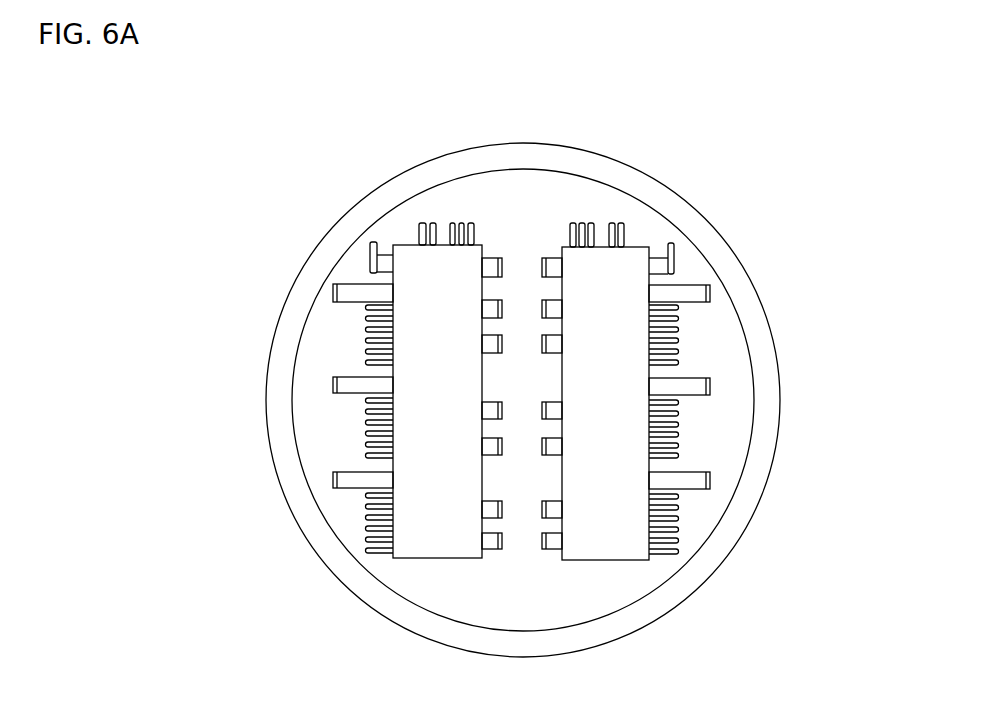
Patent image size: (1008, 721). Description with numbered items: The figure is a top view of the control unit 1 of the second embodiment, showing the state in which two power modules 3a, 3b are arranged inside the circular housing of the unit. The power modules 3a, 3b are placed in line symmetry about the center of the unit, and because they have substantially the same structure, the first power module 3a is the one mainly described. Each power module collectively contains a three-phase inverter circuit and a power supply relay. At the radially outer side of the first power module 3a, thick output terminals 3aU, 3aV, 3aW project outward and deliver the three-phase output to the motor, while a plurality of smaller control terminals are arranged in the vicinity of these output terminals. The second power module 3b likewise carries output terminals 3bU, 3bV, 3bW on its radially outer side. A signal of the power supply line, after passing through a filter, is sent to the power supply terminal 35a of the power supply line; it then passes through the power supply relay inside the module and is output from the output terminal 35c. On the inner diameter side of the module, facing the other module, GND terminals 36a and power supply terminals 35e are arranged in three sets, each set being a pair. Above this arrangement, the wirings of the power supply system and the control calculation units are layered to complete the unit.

The control unit 1 is at (432, 162).
The power module 3a is at (445, 413).
The power module 3b is at (700, 367).
The power supply terminal 35a is at (368, 252).
The output terminal 35c is at (503, 258).
The power supply terminal 35e is at (495, 517).
The GND terminal 36a is at (503, 548).
The output terminal 3aU is at (333, 292).
The output terminal 3aV is at (333, 385).
The output terminal 3aW is at (333, 481).
The output terminal 3bU is at (710, 480).
The output terminal 3bV is at (710, 386).
The output terminal 3bW is at (710, 290).